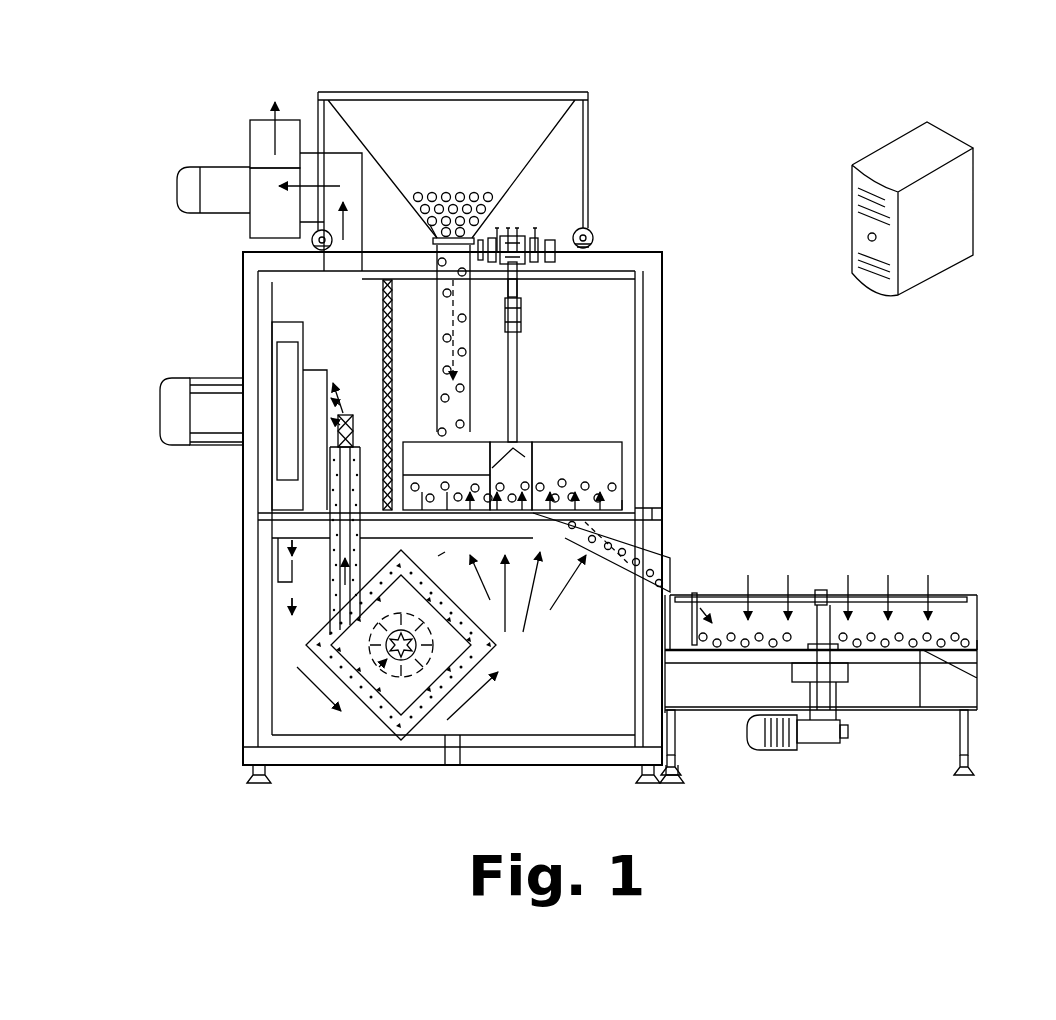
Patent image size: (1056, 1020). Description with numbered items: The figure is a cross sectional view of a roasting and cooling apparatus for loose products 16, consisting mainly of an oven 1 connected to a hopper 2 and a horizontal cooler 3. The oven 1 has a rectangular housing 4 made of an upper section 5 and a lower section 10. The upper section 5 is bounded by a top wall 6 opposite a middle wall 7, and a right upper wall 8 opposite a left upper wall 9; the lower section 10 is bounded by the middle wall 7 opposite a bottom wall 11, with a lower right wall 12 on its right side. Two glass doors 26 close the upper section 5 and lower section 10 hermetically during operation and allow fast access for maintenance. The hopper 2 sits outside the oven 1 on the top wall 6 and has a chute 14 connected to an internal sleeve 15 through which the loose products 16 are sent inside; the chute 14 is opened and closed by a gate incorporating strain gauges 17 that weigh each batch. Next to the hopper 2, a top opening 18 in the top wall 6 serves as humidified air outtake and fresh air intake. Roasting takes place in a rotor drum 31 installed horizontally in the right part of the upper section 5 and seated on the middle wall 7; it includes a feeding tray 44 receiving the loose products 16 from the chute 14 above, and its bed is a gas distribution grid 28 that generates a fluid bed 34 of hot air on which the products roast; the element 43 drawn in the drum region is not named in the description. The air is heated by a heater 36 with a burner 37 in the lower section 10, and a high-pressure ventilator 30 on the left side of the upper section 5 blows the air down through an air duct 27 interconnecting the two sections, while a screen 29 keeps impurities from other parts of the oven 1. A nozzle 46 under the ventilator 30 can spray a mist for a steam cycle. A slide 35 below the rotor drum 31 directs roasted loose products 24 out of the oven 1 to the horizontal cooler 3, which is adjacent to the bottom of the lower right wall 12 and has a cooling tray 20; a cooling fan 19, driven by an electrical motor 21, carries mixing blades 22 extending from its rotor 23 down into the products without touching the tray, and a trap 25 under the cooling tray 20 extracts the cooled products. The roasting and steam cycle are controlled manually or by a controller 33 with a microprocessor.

The oven 1 is at (662, 205).
The hopper 2 is at (540, 105).
The horizontal cooler 3 is at (822, 523).
The rectangular housing 4 is at (668, 250).
The upper section 5 is at (598, 318).
The top wall 6 is at (599, 243).
The middle wall 7 is at (270, 517).
The right upper wall 8 is at (660, 318).
The left upper wall 9 is at (240, 290).
The lower section 10 is at (610, 703).
The bottom wall 11 is at (623, 270).
The lower right wall 12 is at (663, 757).
The chute 14 is at (435, 228).
The internal sleeve 15 is at (430, 363).
The loose products 16 is at (457, 198).
The strain gauges 17 is at (440, 228).
The top opening 18 is at (337, 273).
The cooling fan 19 is at (877, 597).
The cooling tray 20 is at (867, 665).
The electrical motor 21 is at (812, 747).
The mixing blades 22 is at (690, 630).
The rotor 23 is at (742, 605).
The roasted loose products 24 is at (662, 557).
The trap 25 is at (975, 647).
The glass doors 26 is at (438, 556).
The air duct 27 is at (305, 498).
The gas distribution grid 28 is at (622, 507).
The screen 29 is at (383, 322).
The high-pressure ventilator 30 is at (222, 377).
The rotor drum 31 is at (518, 392).
The controller 33 is at (905, 148).
The fluid bed 34 is at (537, 490).
The slide 35 is at (597, 497).
The heater 36 is at (338, 655).
The burner 37 is at (388, 641).
The media 43 is at (562, 483).
The feeding tray 44 is at (427, 470).
The nozzle 46 is at (280, 567).